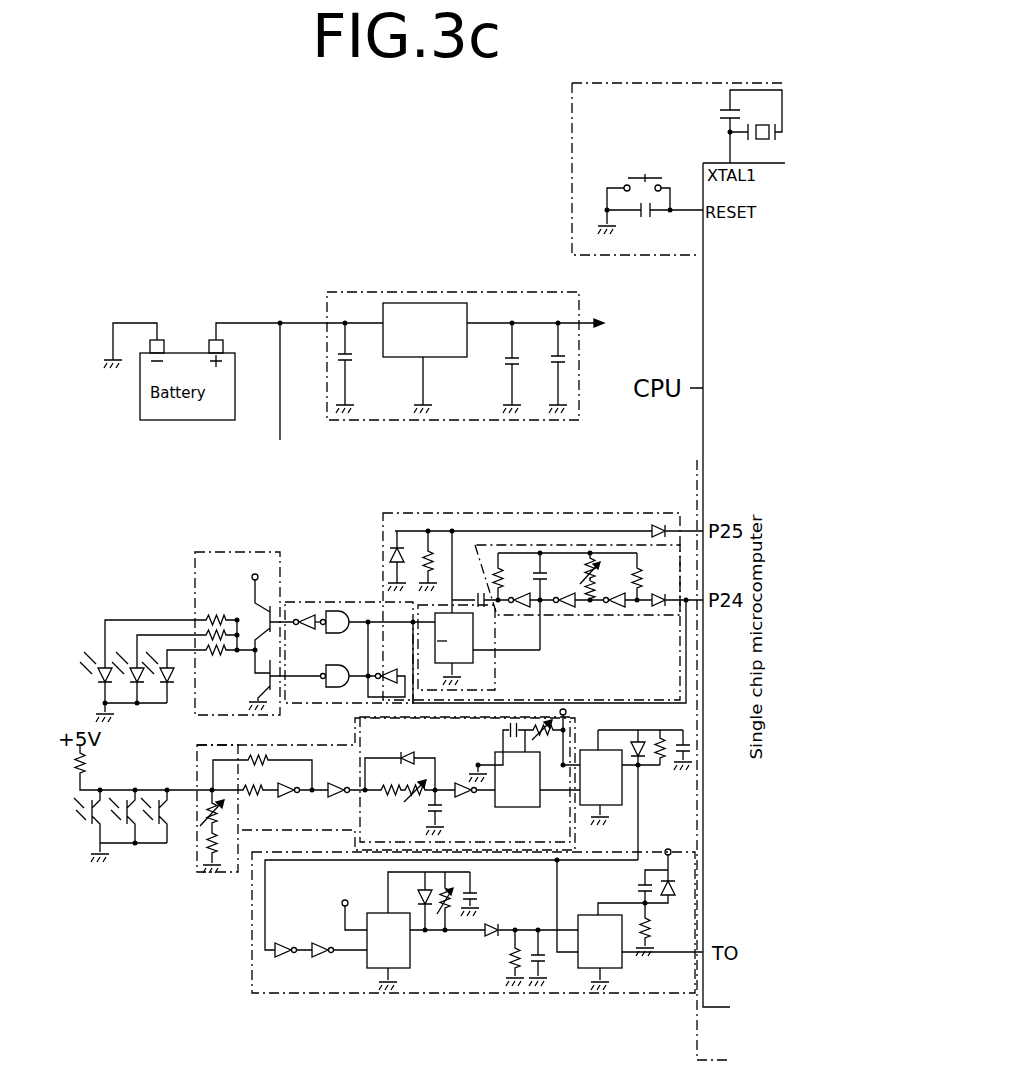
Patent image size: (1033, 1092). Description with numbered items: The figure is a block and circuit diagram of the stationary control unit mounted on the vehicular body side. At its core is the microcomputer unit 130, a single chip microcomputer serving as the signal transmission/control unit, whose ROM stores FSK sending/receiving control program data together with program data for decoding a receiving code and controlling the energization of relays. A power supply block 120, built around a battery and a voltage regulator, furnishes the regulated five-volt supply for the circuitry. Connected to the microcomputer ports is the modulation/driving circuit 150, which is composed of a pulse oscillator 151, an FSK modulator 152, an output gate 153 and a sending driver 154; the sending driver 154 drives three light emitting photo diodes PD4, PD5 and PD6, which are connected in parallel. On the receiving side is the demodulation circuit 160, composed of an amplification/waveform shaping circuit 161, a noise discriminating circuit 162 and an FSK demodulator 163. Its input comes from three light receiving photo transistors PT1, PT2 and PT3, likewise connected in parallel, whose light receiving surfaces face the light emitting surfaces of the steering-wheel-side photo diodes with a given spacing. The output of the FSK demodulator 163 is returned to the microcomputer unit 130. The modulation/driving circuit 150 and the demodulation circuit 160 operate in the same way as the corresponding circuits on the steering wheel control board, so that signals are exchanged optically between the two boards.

The voltage regulator power supply circuit 120 is at (378, 290).
The microcomputer unit 130 is at (572, 195).
The modulation/driving circuit 150 is at (352, 562).
The pulse oscillator 151 is at (582, 632).
The FSK modulator 152 is at (540, 586).
The output gate 153 is at (305, 602).
The sending driver 154 is at (215, 552).
The demodulation circuit 160 is at (222, 936).
The amplification/waveform shaping circuit 161 is at (218, 874).
The noise discriminating circuit 162 is at (355, 730).
The FSK demodulator 163 is at (252, 987).
The photo diode PD4 is at (139, 668).
The photo diode PD5 is at (134, 688).
The photo diode PD6 is at (168, 688).
The photo transistor PT1 is at (88, 843).
The photo transistor PT2 is at (130, 848).
The photo transistor PT3 is at (163, 848).